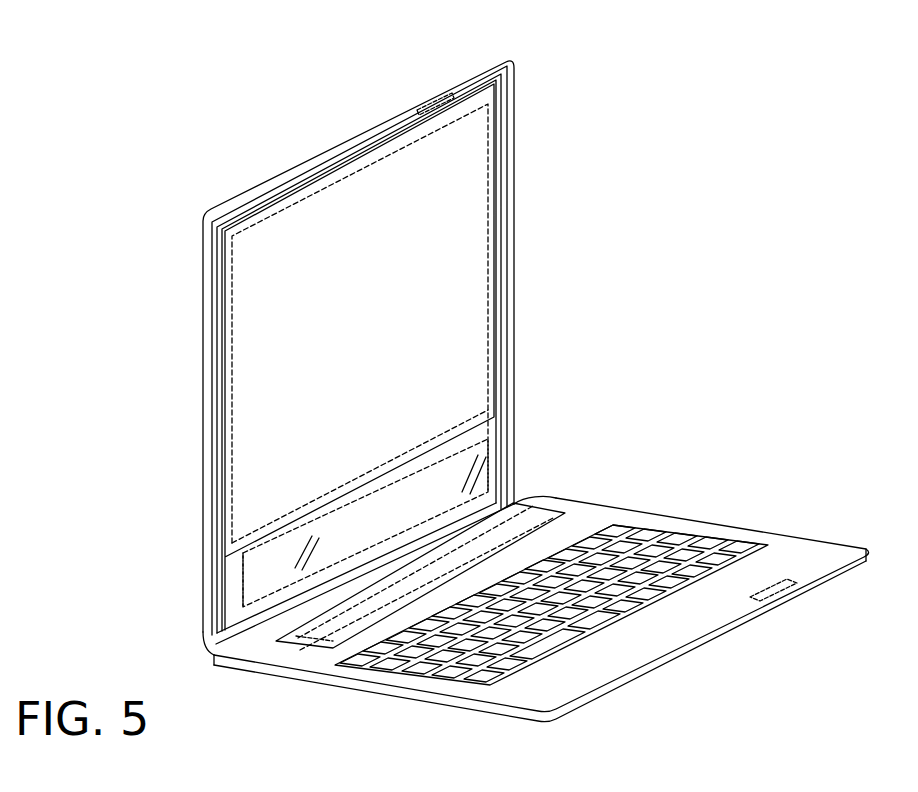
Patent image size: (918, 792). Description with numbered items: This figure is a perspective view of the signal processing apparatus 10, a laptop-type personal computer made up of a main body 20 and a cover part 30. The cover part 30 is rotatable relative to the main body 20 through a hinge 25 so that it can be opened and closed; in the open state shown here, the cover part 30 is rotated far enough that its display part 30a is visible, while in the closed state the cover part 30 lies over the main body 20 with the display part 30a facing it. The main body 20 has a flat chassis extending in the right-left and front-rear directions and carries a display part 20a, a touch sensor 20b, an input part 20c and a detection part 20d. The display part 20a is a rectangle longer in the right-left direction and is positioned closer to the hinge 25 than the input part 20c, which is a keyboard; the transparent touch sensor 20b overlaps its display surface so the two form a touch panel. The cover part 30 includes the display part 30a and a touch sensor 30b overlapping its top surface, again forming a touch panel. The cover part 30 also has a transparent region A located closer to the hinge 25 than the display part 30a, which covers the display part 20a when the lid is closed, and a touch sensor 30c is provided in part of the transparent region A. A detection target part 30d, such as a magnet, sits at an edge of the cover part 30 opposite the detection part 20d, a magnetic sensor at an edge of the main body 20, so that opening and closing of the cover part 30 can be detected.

The signal processing apparatus 10 is at (191, 156).
The main body 20 is at (480, 716).
The display part 20a is at (570, 510).
The touch sensor 20b is at (560, 500).
The input part 20c is at (643, 530).
The detection part 20d is at (790, 594).
The hinge 25 is at (502, 497).
The cover part 30 is at (182, 369).
The display part 30a is at (478, 203).
The touch sensor 30b is at (490, 247).
The touch sensor 30c is at (508, 432).
The detection target part 30d is at (438, 93).
The transparent region A is at (261, 578).